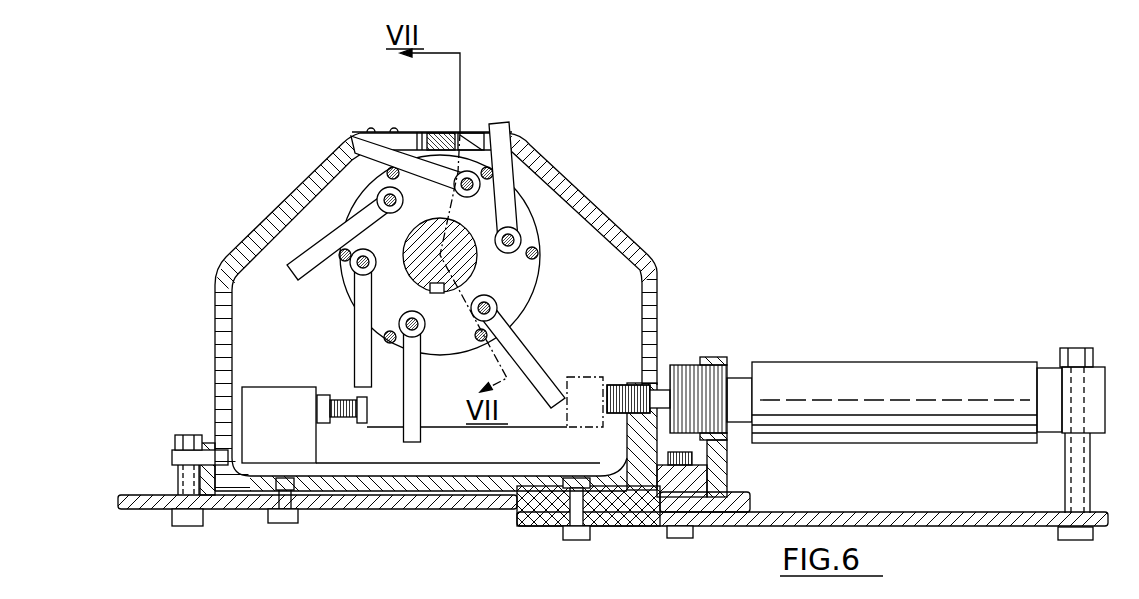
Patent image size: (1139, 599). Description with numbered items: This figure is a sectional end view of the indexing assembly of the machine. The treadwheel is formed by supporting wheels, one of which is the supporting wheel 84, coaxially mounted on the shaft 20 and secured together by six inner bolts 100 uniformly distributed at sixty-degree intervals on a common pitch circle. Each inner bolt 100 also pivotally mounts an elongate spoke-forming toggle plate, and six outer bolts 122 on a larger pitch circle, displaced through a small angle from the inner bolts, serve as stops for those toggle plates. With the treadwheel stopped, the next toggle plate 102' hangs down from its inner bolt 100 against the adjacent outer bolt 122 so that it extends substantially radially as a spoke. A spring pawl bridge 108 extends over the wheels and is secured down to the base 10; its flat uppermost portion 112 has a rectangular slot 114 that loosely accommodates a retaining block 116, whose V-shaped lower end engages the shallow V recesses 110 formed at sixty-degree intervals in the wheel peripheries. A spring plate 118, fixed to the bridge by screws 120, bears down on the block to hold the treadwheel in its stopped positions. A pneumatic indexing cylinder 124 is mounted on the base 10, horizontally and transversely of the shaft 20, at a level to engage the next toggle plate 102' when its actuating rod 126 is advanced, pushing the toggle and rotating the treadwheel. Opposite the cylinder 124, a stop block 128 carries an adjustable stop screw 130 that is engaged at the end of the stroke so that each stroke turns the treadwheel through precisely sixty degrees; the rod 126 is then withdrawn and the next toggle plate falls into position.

The base 10 is at (247, 503).
The shaft 20 is at (460, 268).
The supporting wheel 84 is at (523, 275).
The inner bolt 100 is at (518, 238).
The next toggle plate 102' is at (541, 351).
The spring pawl bridge 108 is at (567, 190).
The V recess 110 is at (515, 236).
The uppermost portion 112 is at (476, 134).
The rectangular slot 114 is at (420, 131).
The retaining block 116 is at (447, 137).
The spring plate 118 is at (445, 136).
The screws 120 is at (386, 131).
The outer bolt 122 is at (538, 253).
The pneumatic indexing cylinder 124 is at (890, 380).
The actuating rod 126 is at (622, 416).
The stop block 128 is at (272, 407).
The stop screw 130 is at (363, 423).